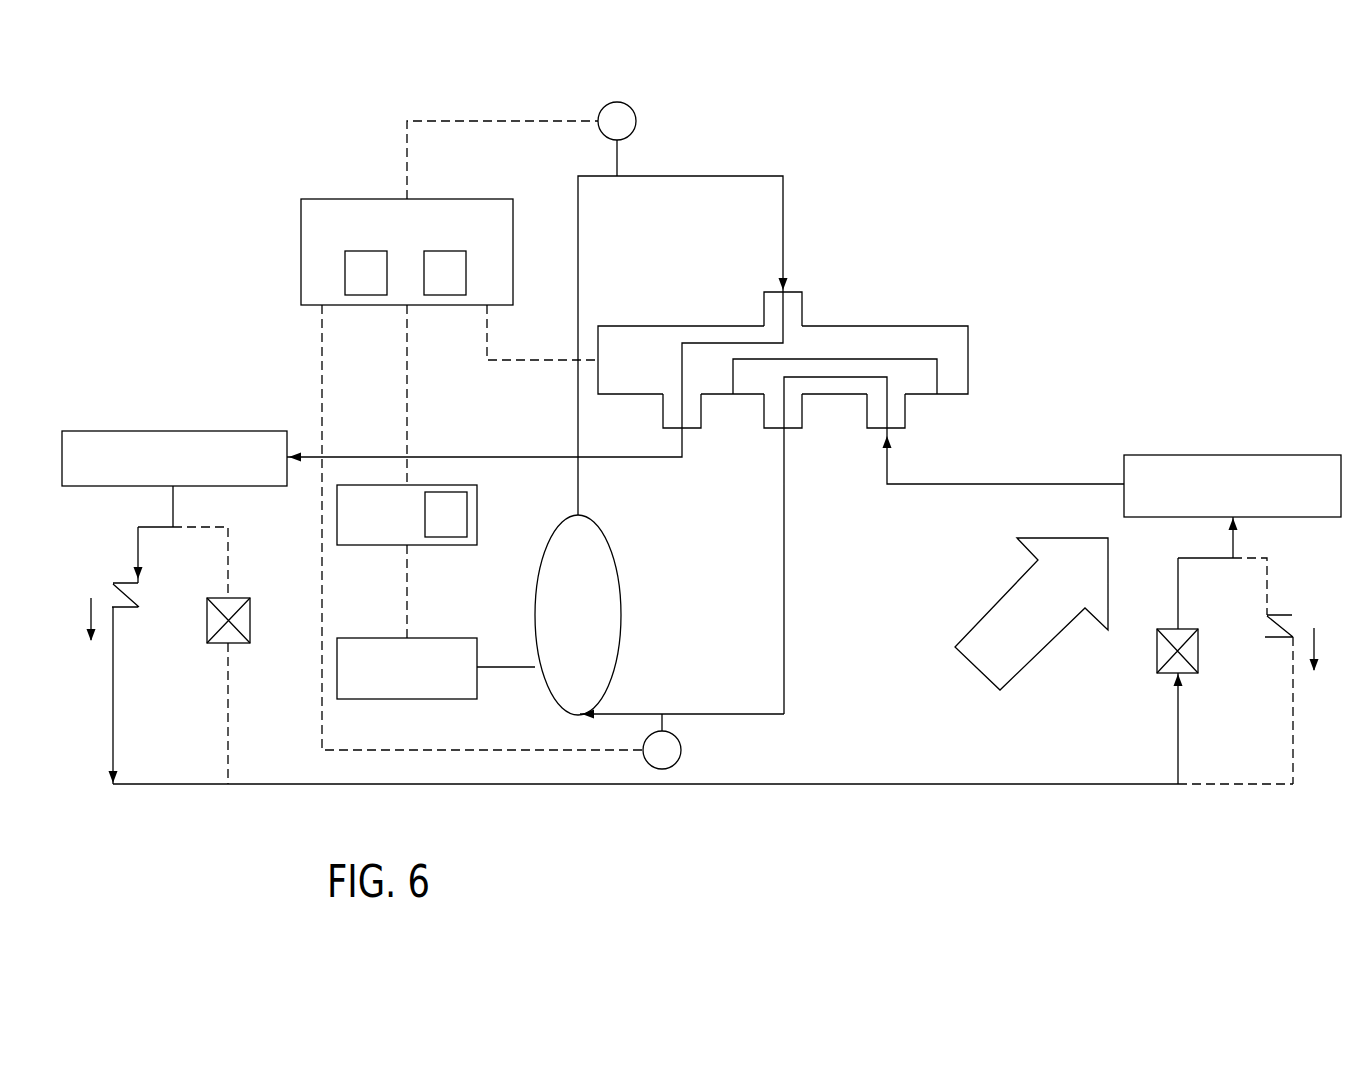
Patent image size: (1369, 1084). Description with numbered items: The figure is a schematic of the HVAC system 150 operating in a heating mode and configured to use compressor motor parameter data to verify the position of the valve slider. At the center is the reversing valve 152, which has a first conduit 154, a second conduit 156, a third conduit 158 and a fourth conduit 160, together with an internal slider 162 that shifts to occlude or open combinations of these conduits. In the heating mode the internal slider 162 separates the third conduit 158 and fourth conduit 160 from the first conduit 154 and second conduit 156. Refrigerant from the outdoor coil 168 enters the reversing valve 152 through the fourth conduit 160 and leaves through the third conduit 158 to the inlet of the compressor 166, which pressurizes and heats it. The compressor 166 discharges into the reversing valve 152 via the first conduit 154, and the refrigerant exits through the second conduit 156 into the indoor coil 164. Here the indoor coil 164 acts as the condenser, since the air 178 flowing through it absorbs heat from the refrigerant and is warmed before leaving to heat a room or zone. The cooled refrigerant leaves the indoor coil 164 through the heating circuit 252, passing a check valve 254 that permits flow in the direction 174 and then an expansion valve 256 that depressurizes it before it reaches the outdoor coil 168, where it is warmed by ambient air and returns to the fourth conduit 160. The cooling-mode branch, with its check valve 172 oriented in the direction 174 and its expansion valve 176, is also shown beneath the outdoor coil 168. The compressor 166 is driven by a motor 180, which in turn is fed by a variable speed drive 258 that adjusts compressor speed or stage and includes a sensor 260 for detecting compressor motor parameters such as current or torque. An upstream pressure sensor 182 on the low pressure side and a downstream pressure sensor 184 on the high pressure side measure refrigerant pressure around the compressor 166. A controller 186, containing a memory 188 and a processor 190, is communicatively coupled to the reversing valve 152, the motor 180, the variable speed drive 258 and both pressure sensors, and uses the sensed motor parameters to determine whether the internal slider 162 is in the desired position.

The HVAC system 150 is at (1150, 196).
The reversing valve 152 is at (948, 326).
The first conduit 154 is at (793, 293).
The second conduit 156 is at (906, 417).
The third conduit 158 is at (803, 410).
The fourth conduit 160 is at (704, 410).
The internal slider 162 is at (723, 343).
The indoor coil 164 is at (1237, 455).
The compressor 166 is at (618, 672).
The outdoor coil 168 is at (175, 431).
The check valve 172 is at (138, 575).
The direction 174 is at (90, 615).
The expansion valve 176 is at (1157, 650).
The air 178 is at (1018, 674).
The motor 180 is at (418, 637).
The upstream pressure sensor 182 is at (681, 752).
The downstream pressure sensor 184 is at (636, 121).
The controller 186 is at (325, 199).
The memory 188 is at (345, 272).
The processor 190 is at (466, 272).
The heating circuit 252 is at (685, 803).
The check valve 254 is at (1282, 615).
The expansion valve 256 is at (250, 620).
The variable speed drive 258 is at (372, 545).
The sensor 260 is at (448, 492).